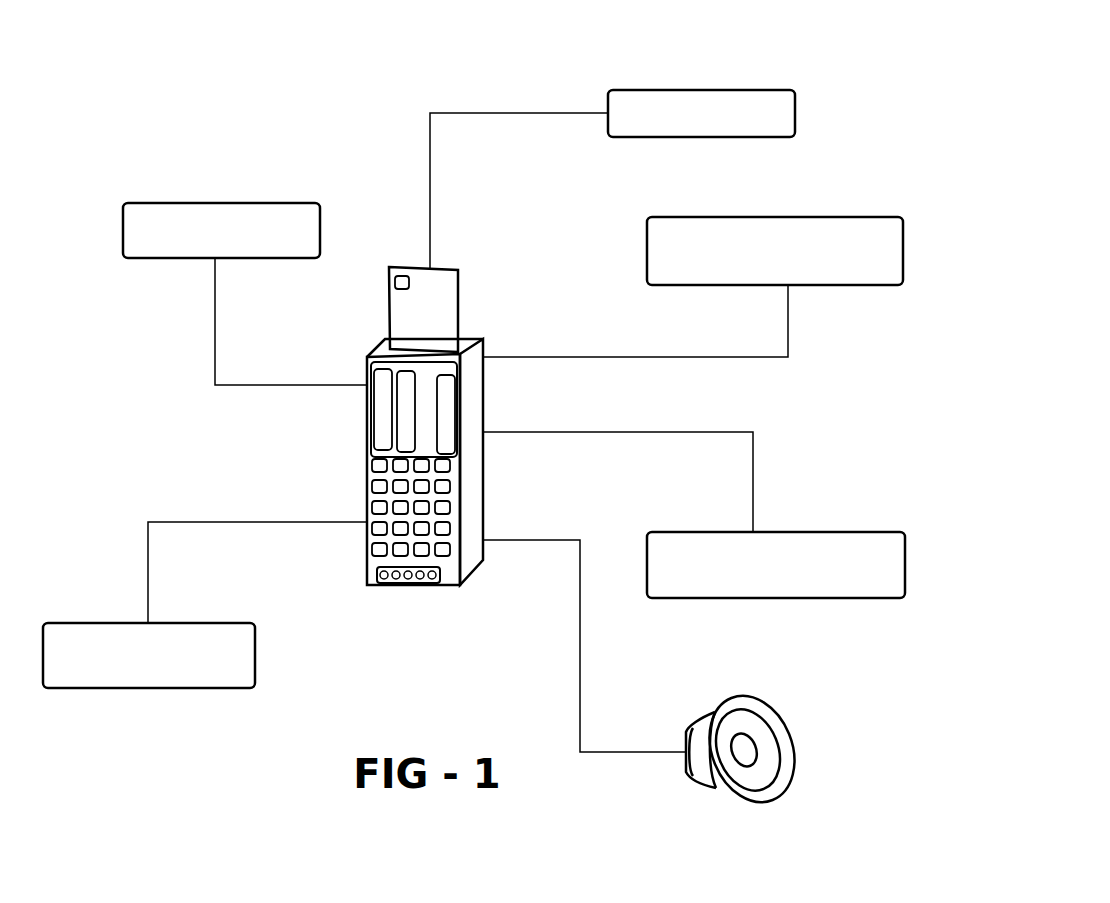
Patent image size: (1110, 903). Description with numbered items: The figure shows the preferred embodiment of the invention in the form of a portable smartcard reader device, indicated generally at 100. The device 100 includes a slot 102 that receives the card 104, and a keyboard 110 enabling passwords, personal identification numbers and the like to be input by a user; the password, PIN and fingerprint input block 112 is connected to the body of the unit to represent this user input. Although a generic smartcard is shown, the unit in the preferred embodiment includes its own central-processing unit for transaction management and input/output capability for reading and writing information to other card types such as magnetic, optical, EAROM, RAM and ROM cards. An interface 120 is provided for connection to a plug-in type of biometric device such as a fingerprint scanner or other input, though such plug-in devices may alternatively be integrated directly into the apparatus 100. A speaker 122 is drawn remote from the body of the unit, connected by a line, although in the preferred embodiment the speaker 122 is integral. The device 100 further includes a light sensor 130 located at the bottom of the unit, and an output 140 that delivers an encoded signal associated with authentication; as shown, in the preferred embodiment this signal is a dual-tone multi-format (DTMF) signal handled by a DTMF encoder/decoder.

The portable smartcard reader device 100 is at (368, 205).
The slot 102 is at (463, 334).
The card 104 is at (783, 90).
The keyboard 110 is at (362, 540).
The password / PIN / fingerprint input 112 is at (197, 203).
The interface 120 is at (853, 217).
The speaker 122 is at (790, 700).
The light sensor 130 is at (397, 585).
The output 140 is at (175, 522).